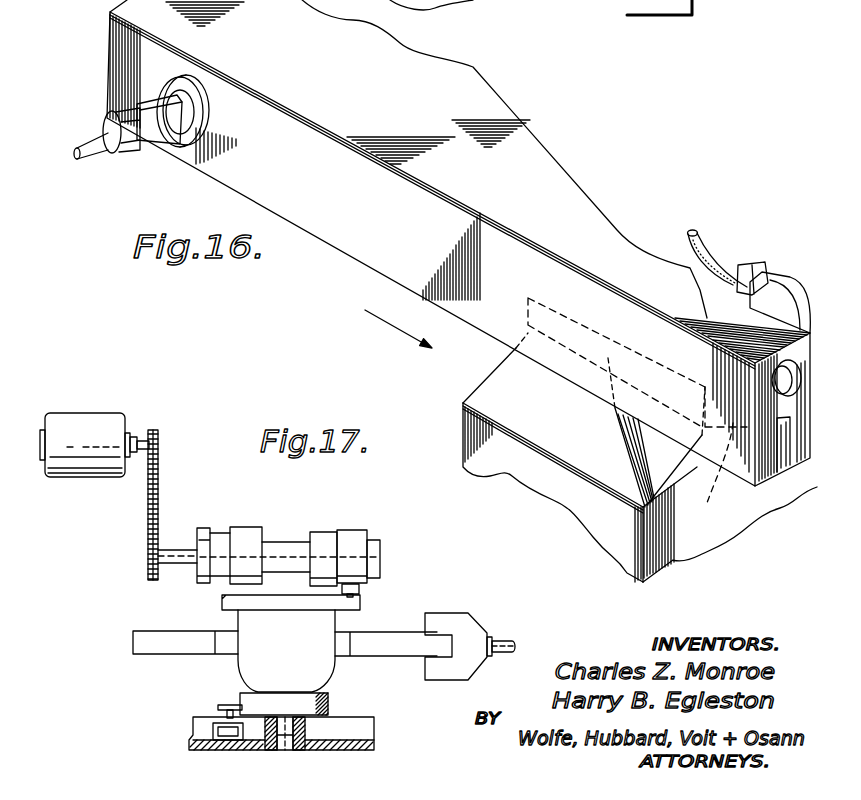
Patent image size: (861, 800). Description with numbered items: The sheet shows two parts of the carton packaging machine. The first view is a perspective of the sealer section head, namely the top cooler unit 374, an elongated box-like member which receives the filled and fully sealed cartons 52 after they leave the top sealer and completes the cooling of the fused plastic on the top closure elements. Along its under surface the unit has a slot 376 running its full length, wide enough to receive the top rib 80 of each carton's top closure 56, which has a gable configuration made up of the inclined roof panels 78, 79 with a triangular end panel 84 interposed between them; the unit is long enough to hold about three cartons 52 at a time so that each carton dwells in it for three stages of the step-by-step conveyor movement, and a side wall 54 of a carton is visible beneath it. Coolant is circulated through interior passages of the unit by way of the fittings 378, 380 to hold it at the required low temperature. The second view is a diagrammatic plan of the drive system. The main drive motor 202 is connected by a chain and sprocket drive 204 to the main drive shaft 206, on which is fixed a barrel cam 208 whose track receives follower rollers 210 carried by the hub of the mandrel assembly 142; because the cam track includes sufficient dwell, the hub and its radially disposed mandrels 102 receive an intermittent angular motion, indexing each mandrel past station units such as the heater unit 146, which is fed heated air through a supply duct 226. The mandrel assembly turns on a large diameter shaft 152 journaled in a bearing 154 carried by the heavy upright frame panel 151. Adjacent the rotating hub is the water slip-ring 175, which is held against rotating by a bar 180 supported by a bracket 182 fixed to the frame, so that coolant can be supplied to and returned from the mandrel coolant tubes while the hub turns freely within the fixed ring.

In FIG. 16, the top cooler unit 374 is at (380, 267).
In FIG. 16, the coolant fitting 378 is at (142, 147).
In FIG. 16, the coolant fitting 380 is at (797, 272).
In FIG. 16, the slot 376 is at (790, 460).
In FIG. 16, the carton 52 is at (513, 490).
In FIG. 16, the front face of block 54 is at (587, 513).
In FIG. 16, the roof panel 78 is at (493, 383).
In FIG. 16, the top closure 56 is at (520, 338).
In FIG. 16, the top rib 80 is at (598, 385).
In FIG. 16, the triangular end panel 84 is at (693, 468).
In FIG. 16, the roof panel 79 is at (723, 470).
In FIG. 17, the main drive motor 202 is at (132, 386).
In FIG. 17, the chain and sprocket drive 204 is at (158, 497).
In FIG. 17, the main drive shaft 206 is at (170, 550).
In FIG. 17, the barrel cam 208 is at (350, 530).
In FIG. 17, the follower rollers 210 is at (363, 595).
In FIG. 17, the mandrel assembly 142 is at (236, 667).
In FIG. 17, the mandrel 102 is at (183, 654).
In FIG. 17, the heater unit 146 is at (465, 615).
In FIG. 17, the supply duct 226 is at (500, 640).
In FIG. 17, the water slip-ring 175 is at (280, 735).
In FIG. 17, the bearing 154 is at (243, 699).
In FIG. 17, the shaft 152 is at (307, 733).
In FIG. 17, the bar 180 is at (225, 714).
In FIG. 17, the bracket 182 is at (213, 727).
In FIG. 17, the frame panel 151 is at (360, 733).